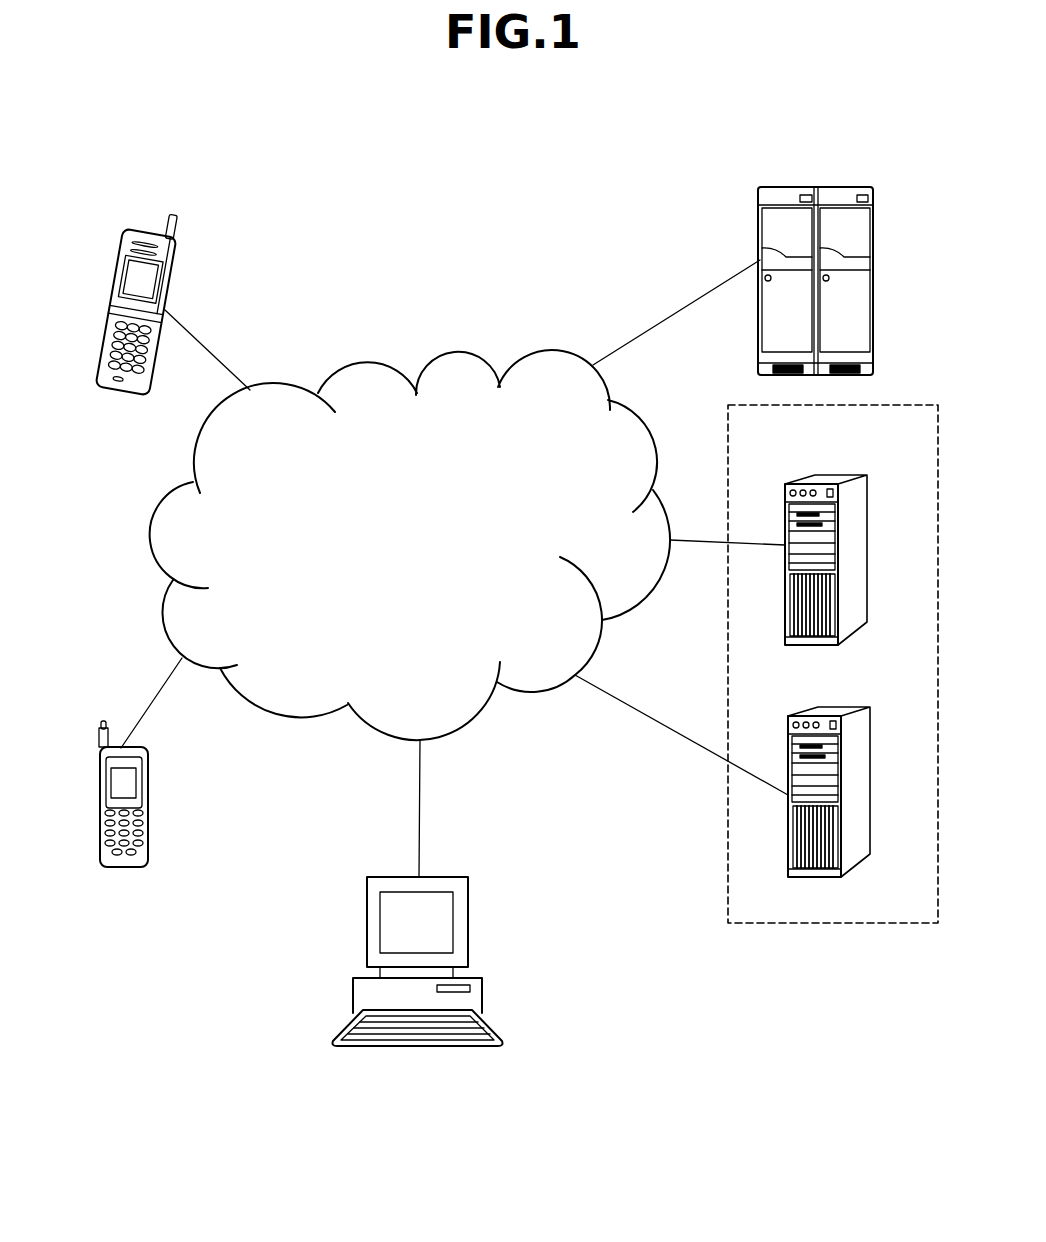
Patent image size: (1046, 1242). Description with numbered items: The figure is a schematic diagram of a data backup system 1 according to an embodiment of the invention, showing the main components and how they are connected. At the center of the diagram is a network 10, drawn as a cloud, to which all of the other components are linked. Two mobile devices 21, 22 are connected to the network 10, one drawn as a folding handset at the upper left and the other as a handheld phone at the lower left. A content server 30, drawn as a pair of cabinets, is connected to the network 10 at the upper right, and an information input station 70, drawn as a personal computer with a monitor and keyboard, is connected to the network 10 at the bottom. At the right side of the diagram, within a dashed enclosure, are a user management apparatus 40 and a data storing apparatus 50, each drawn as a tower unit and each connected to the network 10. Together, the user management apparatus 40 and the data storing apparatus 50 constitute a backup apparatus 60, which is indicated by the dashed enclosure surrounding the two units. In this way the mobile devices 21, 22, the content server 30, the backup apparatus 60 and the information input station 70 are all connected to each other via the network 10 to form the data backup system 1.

The data backup system 1 is at (622, 196).
The network 10 is at (373, 362).
The mobile device 21 is at (112, 312).
The mobile device 22 is at (150, 810).
The content server 30 is at (873, 360).
The user management apparatus 40 is at (787, 632).
The data storing apparatus 50 is at (793, 860).
The backup apparatus 60 is at (833, 684).
The information input station 70 is at (482, 990).